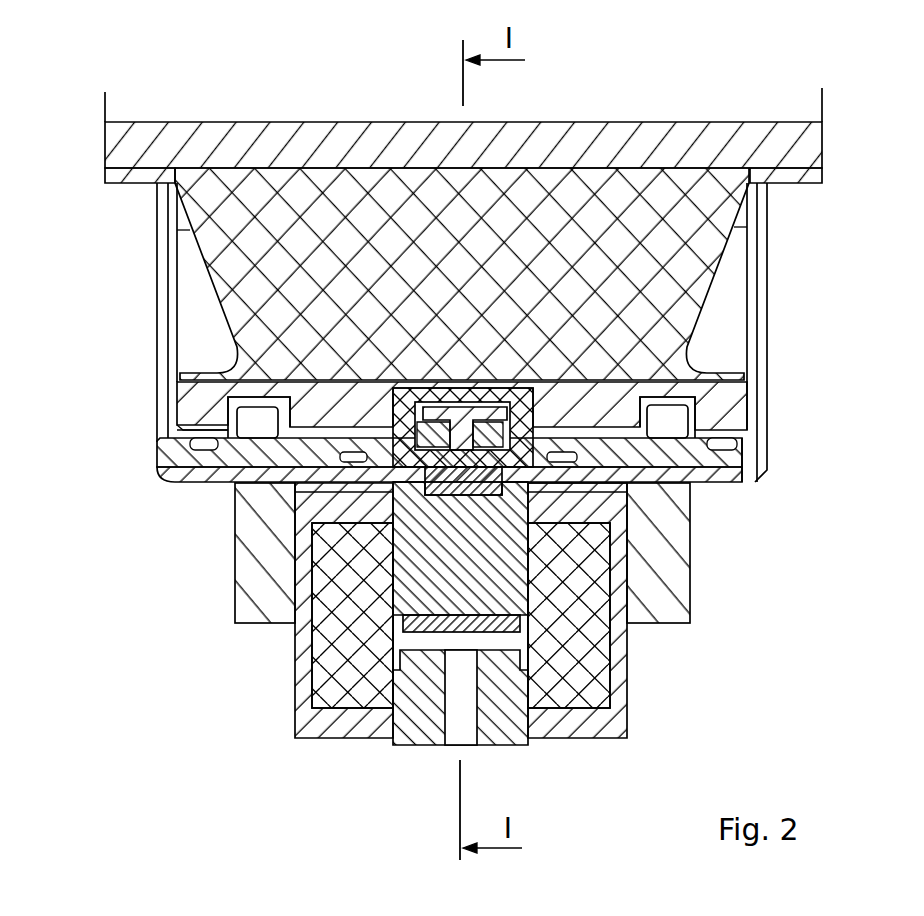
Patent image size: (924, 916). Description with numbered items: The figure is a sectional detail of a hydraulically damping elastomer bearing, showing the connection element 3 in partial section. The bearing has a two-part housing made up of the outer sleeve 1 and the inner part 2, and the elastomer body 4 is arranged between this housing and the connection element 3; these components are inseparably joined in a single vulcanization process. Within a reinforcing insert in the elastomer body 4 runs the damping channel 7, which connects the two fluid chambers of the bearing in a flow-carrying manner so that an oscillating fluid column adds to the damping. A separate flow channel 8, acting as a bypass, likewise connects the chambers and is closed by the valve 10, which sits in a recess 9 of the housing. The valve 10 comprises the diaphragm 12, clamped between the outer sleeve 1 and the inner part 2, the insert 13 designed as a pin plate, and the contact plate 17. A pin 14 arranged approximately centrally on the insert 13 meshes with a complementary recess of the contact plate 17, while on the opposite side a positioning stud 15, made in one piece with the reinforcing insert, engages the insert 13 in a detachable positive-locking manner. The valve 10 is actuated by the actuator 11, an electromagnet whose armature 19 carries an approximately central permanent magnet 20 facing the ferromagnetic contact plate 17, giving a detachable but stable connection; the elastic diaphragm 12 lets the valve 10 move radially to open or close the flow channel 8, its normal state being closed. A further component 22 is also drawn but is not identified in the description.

The outer sleeve 1 is at (747, 482).
The inner part 2 is at (720, 455).
The connection element 3 is at (690, 130).
The elastomer body 4 is at (667, 245).
The damping channel 7 is at (260, 423).
The flow channel 8 is at (545, 407).
The recess 9 is at (533, 477).
The valve 10 is at (503, 372).
The actuator 11 is at (281, 720).
The diaphragm 12 is at (632, 484).
The insert 13 is at (405, 437).
The pin 14 is at (440, 458).
The positioning stud 15 is at (466, 400).
The contact plate 17 is at (552, 476).
The armature 19 is at (490, 580).
The permanent magnet 20 is at (556, 485).
The left spacer block 22 is at (248, 582).